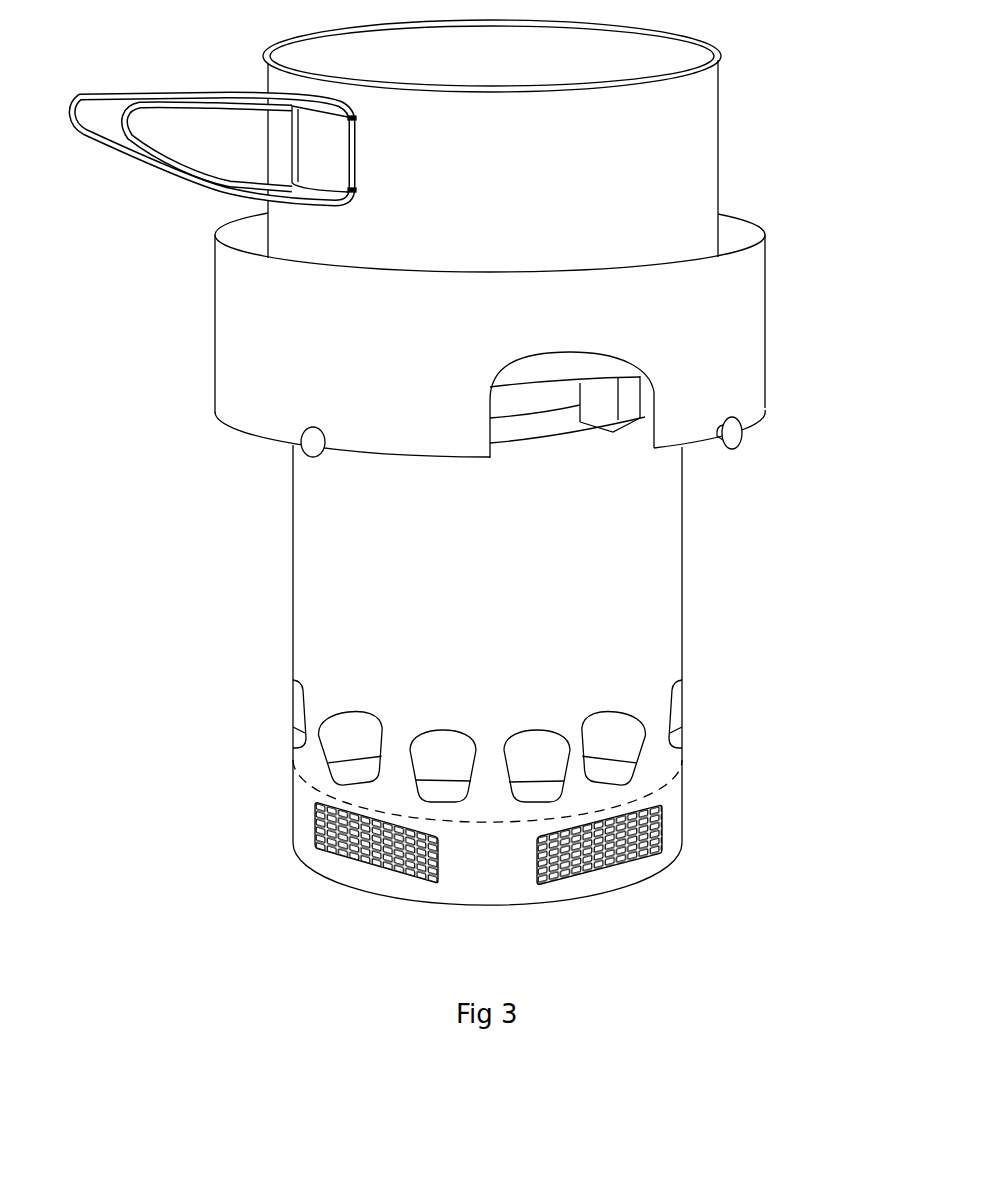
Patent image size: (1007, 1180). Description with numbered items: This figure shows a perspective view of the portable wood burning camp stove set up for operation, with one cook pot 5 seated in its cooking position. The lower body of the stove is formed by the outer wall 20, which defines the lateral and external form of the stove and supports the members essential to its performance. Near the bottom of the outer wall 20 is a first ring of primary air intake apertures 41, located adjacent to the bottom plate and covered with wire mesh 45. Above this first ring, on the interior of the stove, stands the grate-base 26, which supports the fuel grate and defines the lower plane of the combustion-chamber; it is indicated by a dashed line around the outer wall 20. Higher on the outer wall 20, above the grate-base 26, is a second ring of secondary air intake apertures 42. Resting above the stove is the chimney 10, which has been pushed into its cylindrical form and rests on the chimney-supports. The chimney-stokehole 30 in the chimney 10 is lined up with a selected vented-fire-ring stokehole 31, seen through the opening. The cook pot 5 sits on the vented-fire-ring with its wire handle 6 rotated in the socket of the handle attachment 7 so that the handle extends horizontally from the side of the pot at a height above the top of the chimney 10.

The cook pot 5 is at (728, 148).
The wire handle 6 is at (115, 88).
The handle attachment 7 is at (318, 135).
The chimney 10 is at (212, 364).
The outer wall 20 is at (290, 537).
The grate-base 26 is at (308, 771).
The chimney-stokehole 30 is at (632, 358).
The vented-fire-ring stokehole 31 is at (557, 422).
The primary air intake apertures 41 is at (648, 807).
The secondary air intake apertures 42 is at (628, 726).
The wire mesh 45 is at (638, 830).